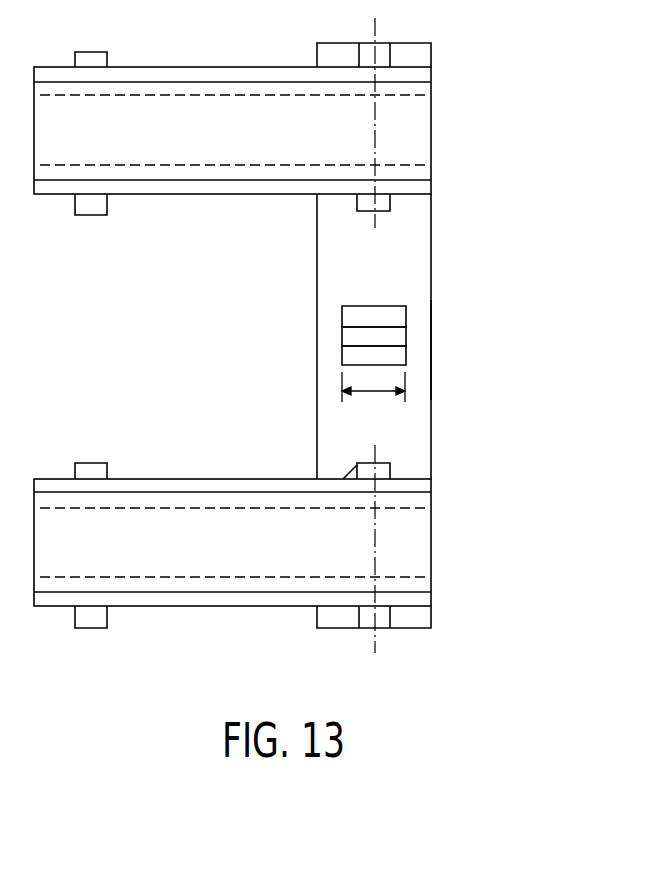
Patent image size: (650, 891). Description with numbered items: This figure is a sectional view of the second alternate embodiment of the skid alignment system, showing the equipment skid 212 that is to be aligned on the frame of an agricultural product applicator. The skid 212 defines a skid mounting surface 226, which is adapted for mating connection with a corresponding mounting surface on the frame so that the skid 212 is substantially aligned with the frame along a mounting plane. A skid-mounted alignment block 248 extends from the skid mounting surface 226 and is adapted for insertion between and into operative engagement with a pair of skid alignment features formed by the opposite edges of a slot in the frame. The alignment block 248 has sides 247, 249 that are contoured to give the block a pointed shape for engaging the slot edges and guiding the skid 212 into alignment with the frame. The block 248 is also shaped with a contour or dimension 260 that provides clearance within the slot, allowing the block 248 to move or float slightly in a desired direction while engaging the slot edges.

The equipment skid 212 is at (431, 243).
The skid mounting surface 226 is at (425, 350).
The side of alignment block 247 is at (346, 317).
The skid-mounted alignment block 248 is at (397, 330).
The side of alignment block 249 is at (351, 354).
The contour or dimension 260 is at (372, 392).